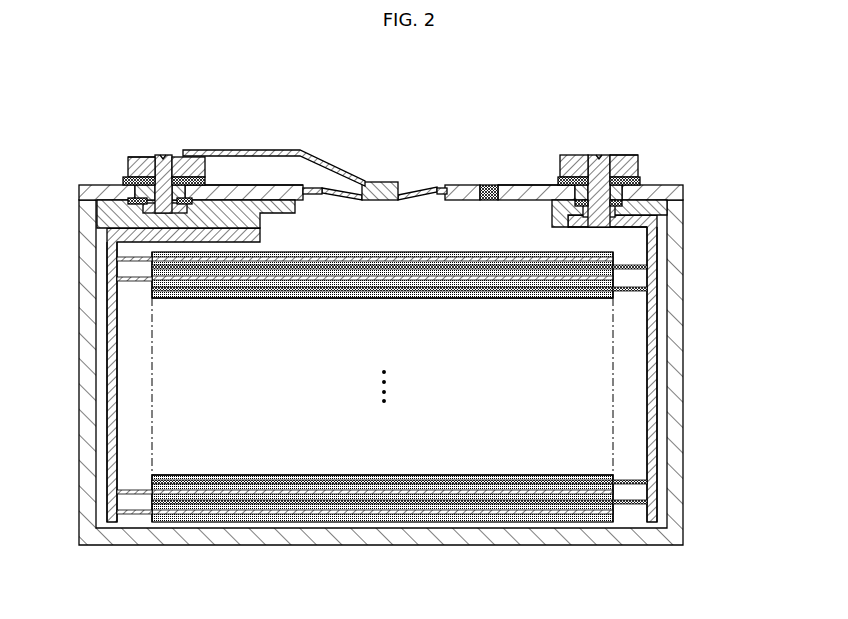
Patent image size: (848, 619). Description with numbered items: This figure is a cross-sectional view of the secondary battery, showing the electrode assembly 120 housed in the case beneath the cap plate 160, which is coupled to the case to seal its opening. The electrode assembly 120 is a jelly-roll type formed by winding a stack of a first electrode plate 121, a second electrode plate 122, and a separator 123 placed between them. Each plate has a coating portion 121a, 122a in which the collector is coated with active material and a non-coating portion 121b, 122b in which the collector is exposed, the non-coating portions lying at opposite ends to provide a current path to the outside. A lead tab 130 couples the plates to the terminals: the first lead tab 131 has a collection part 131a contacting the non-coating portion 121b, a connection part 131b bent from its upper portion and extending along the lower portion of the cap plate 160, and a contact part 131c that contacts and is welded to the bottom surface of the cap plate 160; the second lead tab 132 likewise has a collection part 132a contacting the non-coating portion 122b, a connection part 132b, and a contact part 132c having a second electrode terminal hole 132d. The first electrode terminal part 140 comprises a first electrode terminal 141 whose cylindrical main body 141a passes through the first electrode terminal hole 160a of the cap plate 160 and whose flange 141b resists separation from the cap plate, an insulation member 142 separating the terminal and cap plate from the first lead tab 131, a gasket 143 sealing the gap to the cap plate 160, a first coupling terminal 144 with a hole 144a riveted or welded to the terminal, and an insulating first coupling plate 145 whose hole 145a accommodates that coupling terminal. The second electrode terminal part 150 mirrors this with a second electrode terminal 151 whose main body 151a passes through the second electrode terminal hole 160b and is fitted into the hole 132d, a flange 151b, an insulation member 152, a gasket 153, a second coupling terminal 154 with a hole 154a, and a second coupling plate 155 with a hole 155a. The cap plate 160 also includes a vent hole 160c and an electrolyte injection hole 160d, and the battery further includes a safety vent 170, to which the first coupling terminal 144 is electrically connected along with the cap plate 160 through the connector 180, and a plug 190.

The electrode assembly 120 is at (382, 424).
The first electrode plate 121 is at (361, 423).
The coating portion 121a is at (185, 521).
The non-coating portion 121b is at (132, 514).
The second electrode plate 122 is at (403, 423).
The coating portion 122a is at (585, 505).
The non-coating portion 122b is at (633, 508).
The separator 123 is at (283, 520).
The lead tab 130 is at (411, 372).
The first lead tab 131 is at (383, 373).
The collection part 131a is at (108, 308).
The connection part 131b is at (117, 268).
The contact part 131c is at (110, 233).
The second lead tab 132 is at (657, 368).
The collection part 132a is at (657, 307).
The connection part 132b is at (657, 233).
The contact part 132c is at (657, 276).
The second electrode terminal hole 132d is at (635, 243).
The first electrode terminal part 140 is at (158, 151).
The first electrode terminal 141 is at (142, 153).
The main body 141a is at (171, 183).
The flange 141b is at (200, 206).
The insulation member 142 is at (118, 212).
The gasket 143 is at (134, 190).
The first coupling terminal 144 is at (144, 135).
The first electrode terminal hole 144a is at (141, 157).
The first coupling plate 145 is at (126, 159).
The first electrode terminal hole 145a is at (127, 182).
The second electrode terminal part 150 is at (631, 160).
The second electrode terminal 151 is at (645, 165).
The main body 151a is at (597, 170).
The flange 151b is at (655, 200).
The insulation member 152 is at (657, 215).
The gasket 153 is at (650, 193).
The second coupling terminal 154 is at (608, 137).
The second electrode terminal hole 154a is at (633, 157).
The second coupling plate 155 is at (636, 161).
The second electrode terminal hole 155a is at (640, 185).
The cap plate 160 is at (381, 180).
The first electrode terminal hole 160a is at (205, 186).
The second electrode terminal hole 160b is at (565, 190).
The vent hole 160c is at (320, 192).
The electrolyte injection hole 160d is at (493, 200).
The safety vent 170 is at (411, 177).
The connector 180 is at (279, 146).
The plug 190 is at (490, 186).